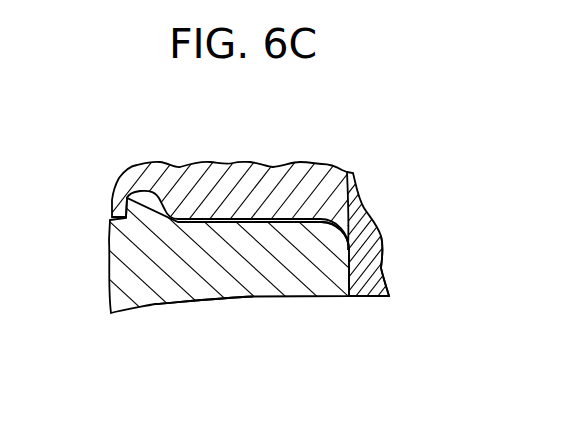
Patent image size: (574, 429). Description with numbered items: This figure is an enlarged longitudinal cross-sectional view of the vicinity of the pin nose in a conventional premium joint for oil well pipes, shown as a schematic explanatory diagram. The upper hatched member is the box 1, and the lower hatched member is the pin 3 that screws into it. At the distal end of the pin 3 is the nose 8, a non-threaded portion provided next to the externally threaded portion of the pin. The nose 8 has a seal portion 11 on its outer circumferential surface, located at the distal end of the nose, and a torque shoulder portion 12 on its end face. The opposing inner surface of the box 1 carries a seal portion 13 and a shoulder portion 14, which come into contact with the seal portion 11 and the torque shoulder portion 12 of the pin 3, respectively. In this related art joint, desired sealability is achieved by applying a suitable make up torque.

The box 1 is at (235, 187).
The pin 3 is at (154, 296).
The nose 8 is at (243, 270).
The seal portion 11 is at (338, 227).
The torque shoulder portion 12 is at (350, 257).
The seal portion 13 is at (347, 171).
The shoulder portion 14 is at (378, 268).